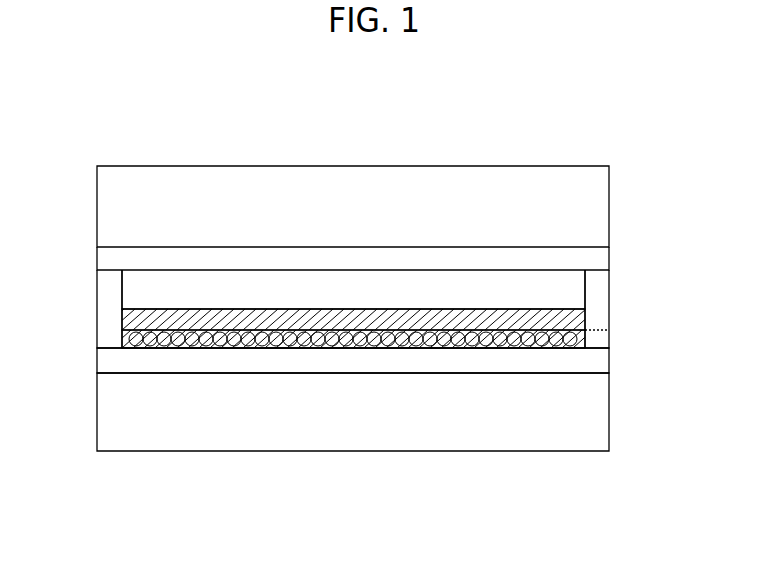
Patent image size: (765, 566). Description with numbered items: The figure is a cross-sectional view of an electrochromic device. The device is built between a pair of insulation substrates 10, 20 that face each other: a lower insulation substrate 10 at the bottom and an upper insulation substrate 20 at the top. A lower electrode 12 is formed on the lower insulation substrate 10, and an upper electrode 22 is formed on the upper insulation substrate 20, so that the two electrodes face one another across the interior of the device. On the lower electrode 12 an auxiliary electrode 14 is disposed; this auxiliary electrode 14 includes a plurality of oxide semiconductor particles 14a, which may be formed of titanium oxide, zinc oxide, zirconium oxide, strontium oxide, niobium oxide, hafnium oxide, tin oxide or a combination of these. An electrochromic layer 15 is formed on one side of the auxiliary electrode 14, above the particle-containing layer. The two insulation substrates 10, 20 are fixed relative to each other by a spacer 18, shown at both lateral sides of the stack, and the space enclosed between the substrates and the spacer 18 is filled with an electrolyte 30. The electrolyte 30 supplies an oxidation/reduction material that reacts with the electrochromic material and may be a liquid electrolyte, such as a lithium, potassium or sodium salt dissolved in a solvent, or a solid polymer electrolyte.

The insulation substrate 10 is at (527, 430).
The lower electrode 12 is at (398, 363).
The auxiliary electrode 14 is at (611, 331).
The oxide semiconductor particles 14a is at (271, 349).
The electrochromic layer 15 is at (611, 310).
The spacer 18 is at (110, 290).
The insulation substrate 20 is at (493, 185).
The upper electrode 22 is at (405, 258).
The electrolyte 30 is at (270, 287).